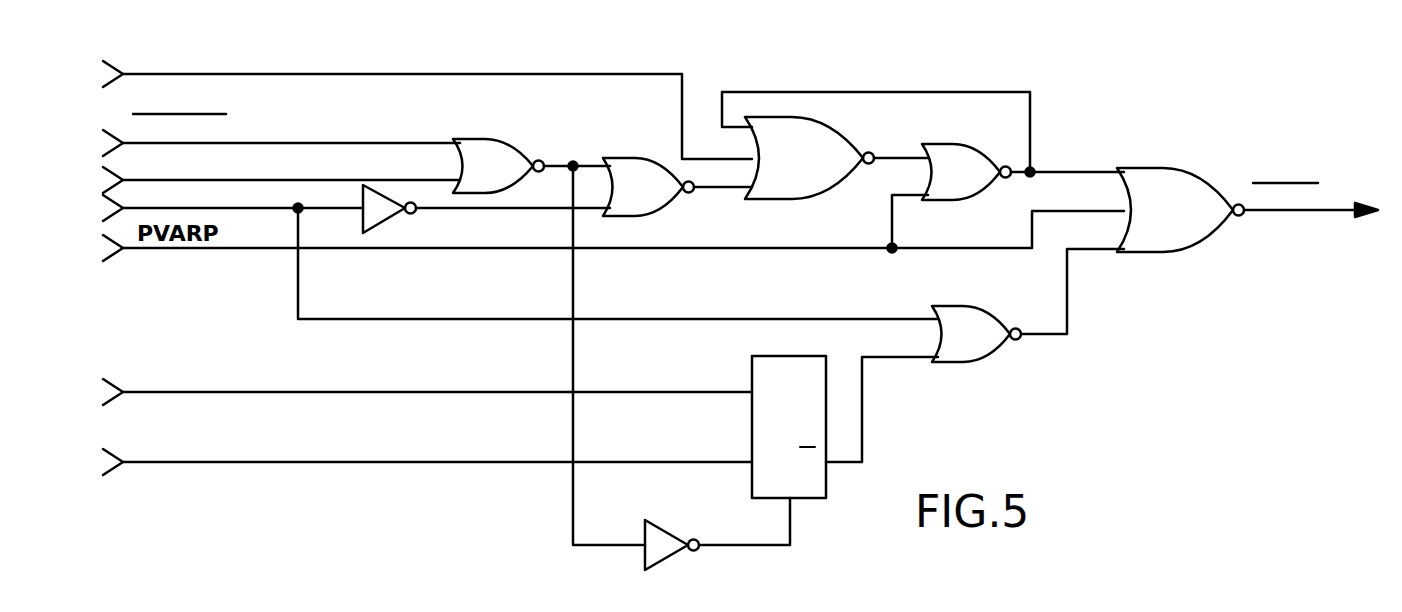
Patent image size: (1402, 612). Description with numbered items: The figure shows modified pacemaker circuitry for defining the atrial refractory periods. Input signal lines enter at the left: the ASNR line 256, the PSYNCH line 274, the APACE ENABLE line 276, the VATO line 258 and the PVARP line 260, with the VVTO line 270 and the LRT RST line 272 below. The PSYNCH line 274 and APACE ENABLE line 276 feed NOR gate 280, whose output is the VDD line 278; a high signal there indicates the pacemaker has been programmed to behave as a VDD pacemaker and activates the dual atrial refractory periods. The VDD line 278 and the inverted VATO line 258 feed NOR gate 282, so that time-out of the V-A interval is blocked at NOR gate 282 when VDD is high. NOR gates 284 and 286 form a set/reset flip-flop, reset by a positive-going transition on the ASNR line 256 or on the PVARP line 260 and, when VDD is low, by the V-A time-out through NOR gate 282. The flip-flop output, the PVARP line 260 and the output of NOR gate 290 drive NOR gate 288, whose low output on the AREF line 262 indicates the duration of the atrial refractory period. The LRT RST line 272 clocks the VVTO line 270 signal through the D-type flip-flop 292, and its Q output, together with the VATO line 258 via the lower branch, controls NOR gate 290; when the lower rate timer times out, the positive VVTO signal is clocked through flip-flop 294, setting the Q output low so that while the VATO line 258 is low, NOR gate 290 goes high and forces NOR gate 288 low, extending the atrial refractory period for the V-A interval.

The ASNR line 256 is at (300, 74).
The PSYNCH line 274 is at (323, 143).
The APACE ENABLE line 276 is at (416, 180).
The VATO line 258 is at (226, 208).
The PVARP line 260 is at (338, 248).
The NOR gate 280 is at (504, 139).
The VDD line 278 is at (560, 167).
The NOR gate 282 is at (652, 216).
The NOR gate 284 is at (820, 120).
The NOR gate 286 is at (990, 137).
The NOR gate 288 is at (1190, 157).
The AREF line 262 is at (1257, 211).
The VVTO line 270 is at (318, 392).
The LRT RST line 272 is at (327, 462).
The NOR gate 290 is at (980, 362).
The D-type flip-flop 292 is at (752, 425).
The flip-flop 294 is at (672, 533).